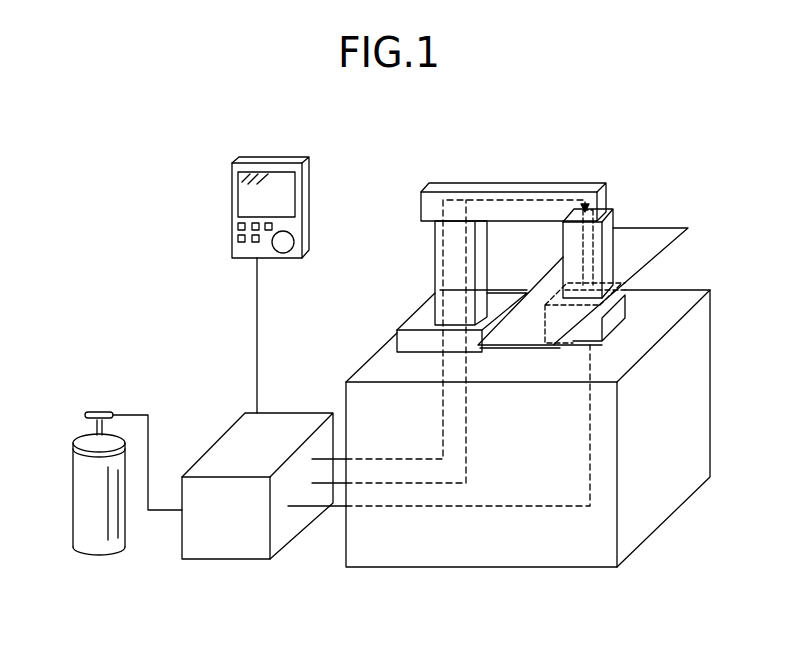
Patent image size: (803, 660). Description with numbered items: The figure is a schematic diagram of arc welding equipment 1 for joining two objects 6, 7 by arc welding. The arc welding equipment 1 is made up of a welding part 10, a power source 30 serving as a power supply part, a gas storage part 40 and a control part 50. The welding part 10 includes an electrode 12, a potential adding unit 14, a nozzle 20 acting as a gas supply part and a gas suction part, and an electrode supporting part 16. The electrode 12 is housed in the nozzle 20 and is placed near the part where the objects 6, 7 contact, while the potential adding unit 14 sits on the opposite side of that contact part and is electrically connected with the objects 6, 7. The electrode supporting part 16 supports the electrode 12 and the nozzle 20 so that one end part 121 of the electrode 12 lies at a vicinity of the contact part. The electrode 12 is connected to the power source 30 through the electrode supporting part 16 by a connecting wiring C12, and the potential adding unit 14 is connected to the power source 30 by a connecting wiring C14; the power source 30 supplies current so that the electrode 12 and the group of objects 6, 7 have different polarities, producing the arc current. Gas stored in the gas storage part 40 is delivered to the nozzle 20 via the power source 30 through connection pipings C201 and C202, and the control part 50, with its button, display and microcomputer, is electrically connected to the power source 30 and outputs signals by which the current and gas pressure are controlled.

The arc welding equipment 1 is at (661, 152).
The welding part 10 is at (663, 523).
The potential adding unit 14 is at (613, 312).
The object 7 is at (513, 350).
The electrode supporting part 16 is at (598, 193).
The nozzle 20 is at (603, 265).
The electrode 12 is at (603, 247).
The one end part 121 is at (628, 301).
The object 6 is at (576, 328).
The connecting wiring C202 is at (442, 428).
The connecting wiring C12 is at (470, 447).
The connecting wiring C14 is at (593, 461).
The power source 30 is at (223, 549).
The gas storage part 40 is at (85, 481).
The connecting wiring C201 is at (142, 412).
The control part 50 is at (303, 192).